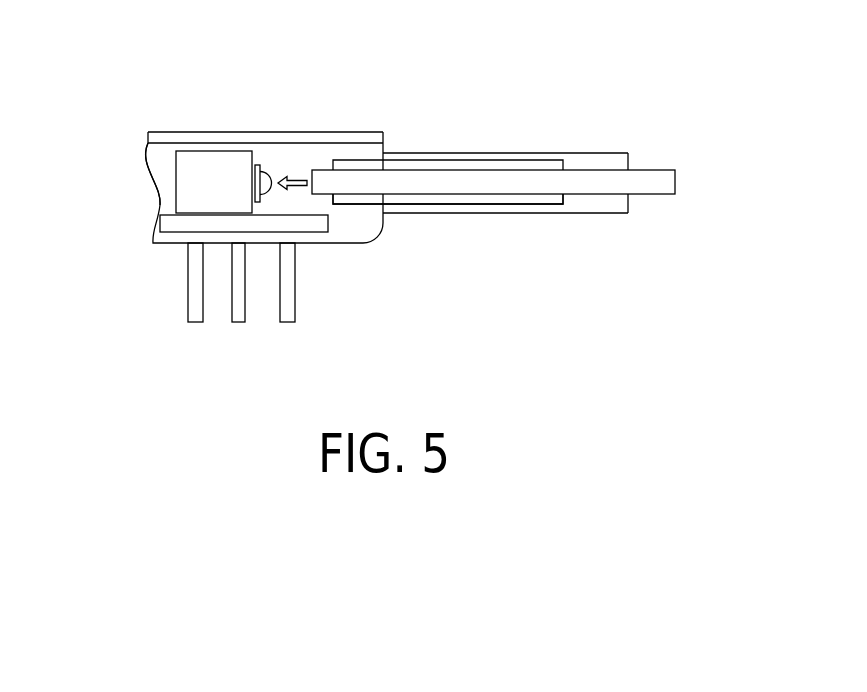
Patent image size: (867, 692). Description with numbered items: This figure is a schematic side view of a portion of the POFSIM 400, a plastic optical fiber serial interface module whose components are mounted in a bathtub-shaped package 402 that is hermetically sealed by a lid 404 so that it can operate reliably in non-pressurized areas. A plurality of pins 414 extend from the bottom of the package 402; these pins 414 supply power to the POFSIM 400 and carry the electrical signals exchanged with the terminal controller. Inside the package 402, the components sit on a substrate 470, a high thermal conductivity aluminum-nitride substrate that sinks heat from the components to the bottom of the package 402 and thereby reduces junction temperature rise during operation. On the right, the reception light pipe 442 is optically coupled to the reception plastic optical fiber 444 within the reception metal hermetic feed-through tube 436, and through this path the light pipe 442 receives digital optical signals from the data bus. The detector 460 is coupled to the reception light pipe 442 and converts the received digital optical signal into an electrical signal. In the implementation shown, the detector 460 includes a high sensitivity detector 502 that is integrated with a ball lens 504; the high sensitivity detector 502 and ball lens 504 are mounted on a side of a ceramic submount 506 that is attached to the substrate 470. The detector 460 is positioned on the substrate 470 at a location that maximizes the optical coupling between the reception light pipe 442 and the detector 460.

The POFSIM 400 is at (538, 82).
The package 402 is at (342, 252).
The lid 404 is at (274, 168).
The pins 414 is at (195, 310).
The reception metal hermetic feed-through tube 436 is at (544, 212).
The reception light pipe 442 is at (443, 190).
The reception plastic optical fiber 444 is at (594, 160).
The detector 460 is at (162, 162).
The substrate 470 is at (166, 219).
The high sensitivity detector 502 is at (256, 165).
The ball lens 504 is at (273, 172).
The ceramic submount 506 is at (217, 168).